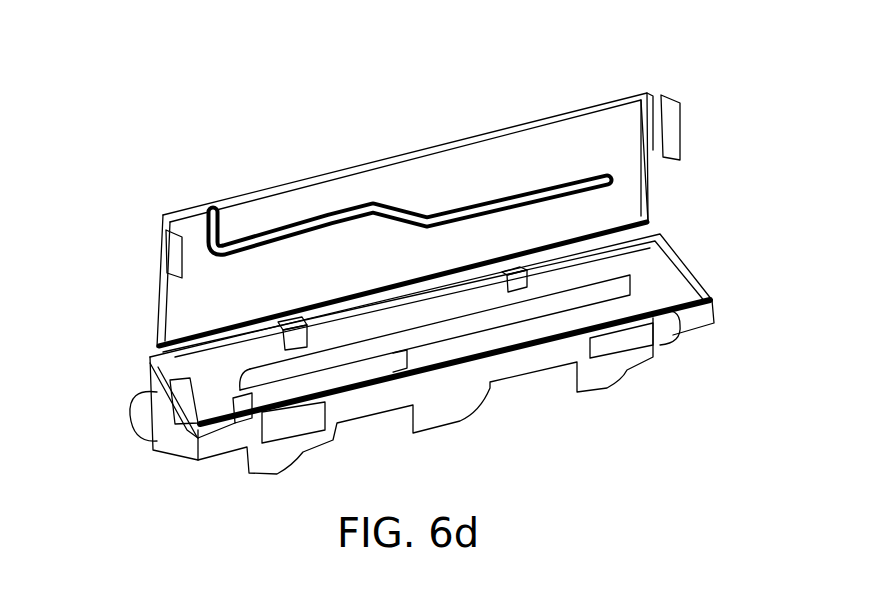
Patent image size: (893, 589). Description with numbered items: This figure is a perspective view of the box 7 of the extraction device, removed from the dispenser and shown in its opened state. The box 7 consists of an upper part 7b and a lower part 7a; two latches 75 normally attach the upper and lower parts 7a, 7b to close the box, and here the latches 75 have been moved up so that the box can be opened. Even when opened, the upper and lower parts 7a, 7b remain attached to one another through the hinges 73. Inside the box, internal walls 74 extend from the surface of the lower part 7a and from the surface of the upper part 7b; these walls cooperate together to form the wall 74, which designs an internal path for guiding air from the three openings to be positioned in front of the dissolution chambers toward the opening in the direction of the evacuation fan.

The box of the extraction device 7 is at (571, 72).
The lower part 7a is at (706, 291).
The upper part 7b is at (266, 190).
The hinges 73 is at (288, 321).
The internal walls 74 is at (480, 200).
The latches 75 is at (157, 256).